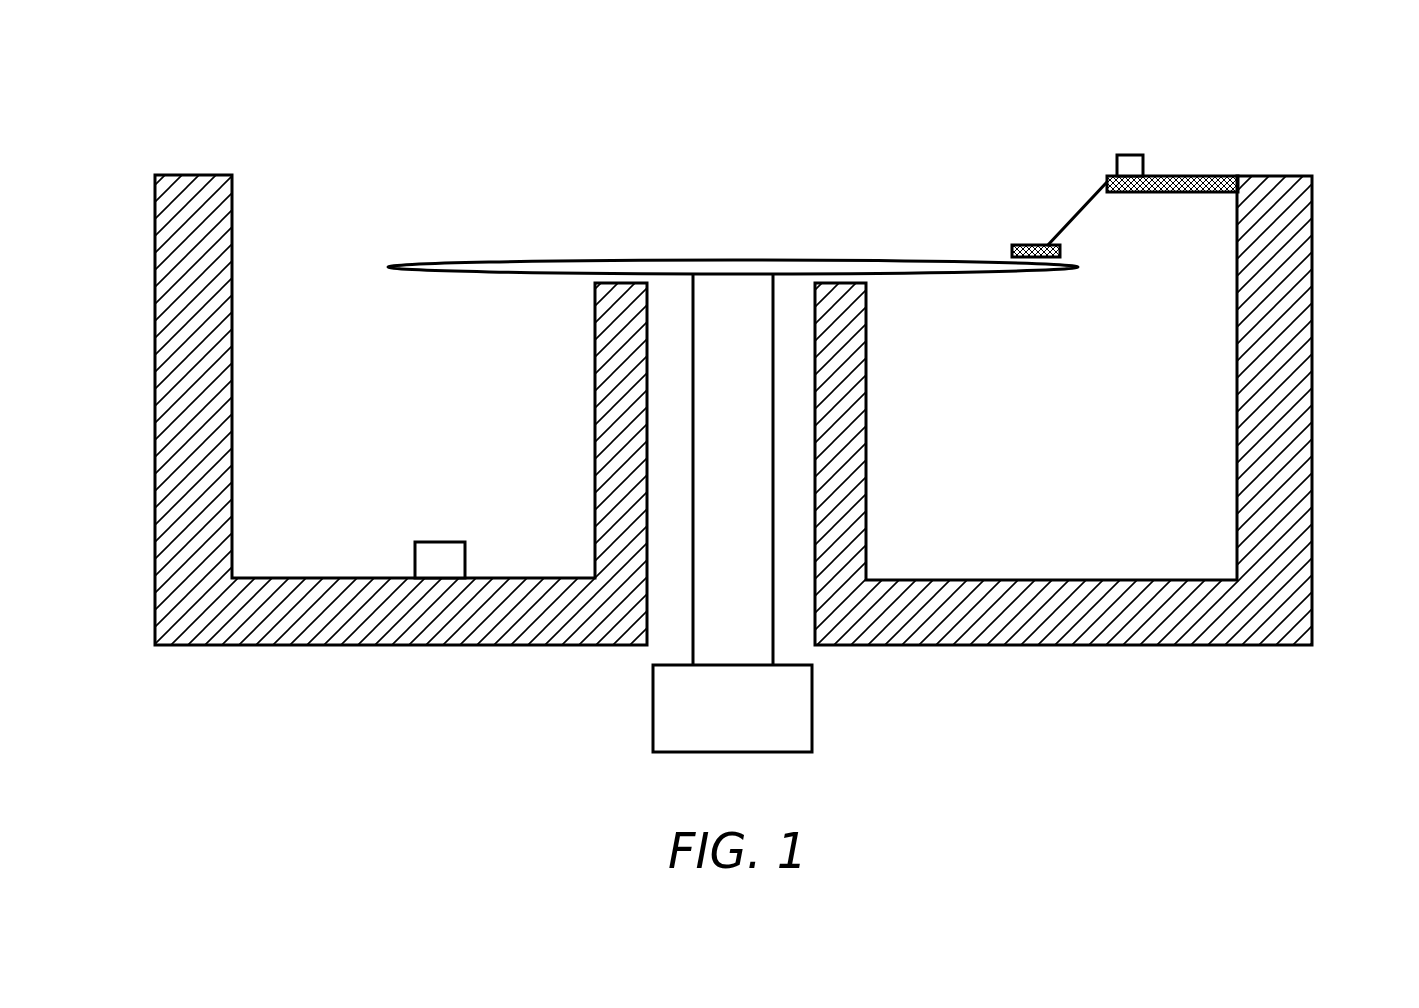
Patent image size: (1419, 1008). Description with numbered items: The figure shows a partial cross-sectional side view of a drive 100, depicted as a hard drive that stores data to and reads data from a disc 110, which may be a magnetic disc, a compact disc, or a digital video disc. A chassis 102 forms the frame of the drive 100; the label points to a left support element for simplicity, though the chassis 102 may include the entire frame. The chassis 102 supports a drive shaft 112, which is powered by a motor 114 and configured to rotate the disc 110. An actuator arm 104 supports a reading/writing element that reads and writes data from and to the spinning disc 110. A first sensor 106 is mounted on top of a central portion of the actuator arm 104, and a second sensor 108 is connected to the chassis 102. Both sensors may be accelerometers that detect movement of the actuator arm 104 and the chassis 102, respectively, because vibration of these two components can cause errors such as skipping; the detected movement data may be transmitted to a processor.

The drive 100 is at (764, 418).
The chassis 102 is at (237, 645).
The actuator arm 104 is at (1235, 175).
The first sensor 106 is at (1130, 155).
The second sensor 108 is at (447, 578).
The disc 110 is at (533, 262).
The drive shaft 112 is at (750, 443).
The motor 114 is at (807, 692).